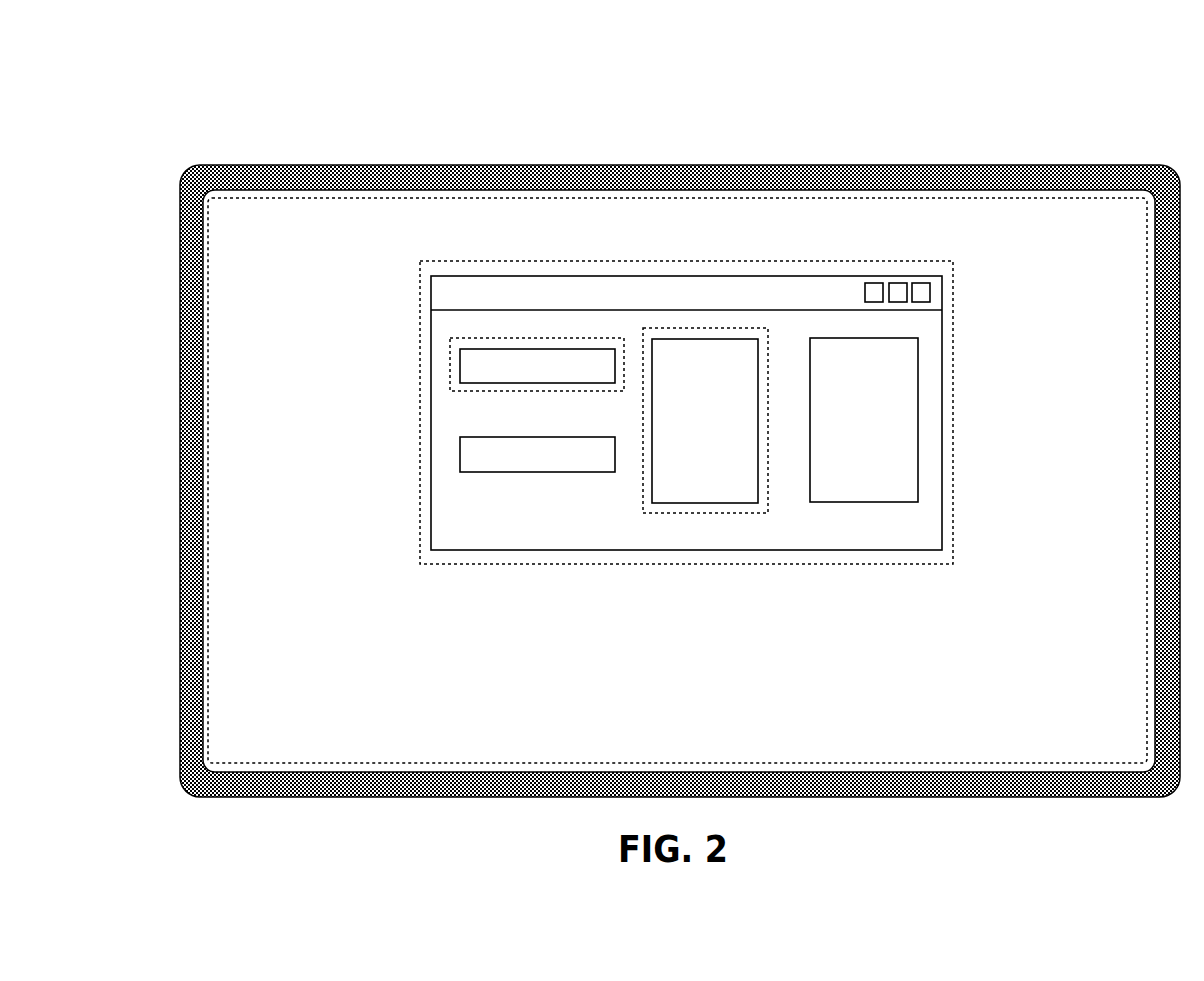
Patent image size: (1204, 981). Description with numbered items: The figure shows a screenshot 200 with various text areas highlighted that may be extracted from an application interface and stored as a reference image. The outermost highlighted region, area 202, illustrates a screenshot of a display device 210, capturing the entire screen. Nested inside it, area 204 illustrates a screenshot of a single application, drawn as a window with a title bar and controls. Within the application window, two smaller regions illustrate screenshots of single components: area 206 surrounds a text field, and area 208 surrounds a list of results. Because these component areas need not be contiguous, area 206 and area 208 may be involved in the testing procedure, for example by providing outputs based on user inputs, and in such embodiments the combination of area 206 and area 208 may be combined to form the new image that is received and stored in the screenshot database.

The computing device 200 is at (661, 430).
The area 202 is at (209, 535).
The area 204 is at (468, 566).
The area 206 is at (534, 391).
The area 208 is at (644, 481).
The display device 210 is at (181, 551).